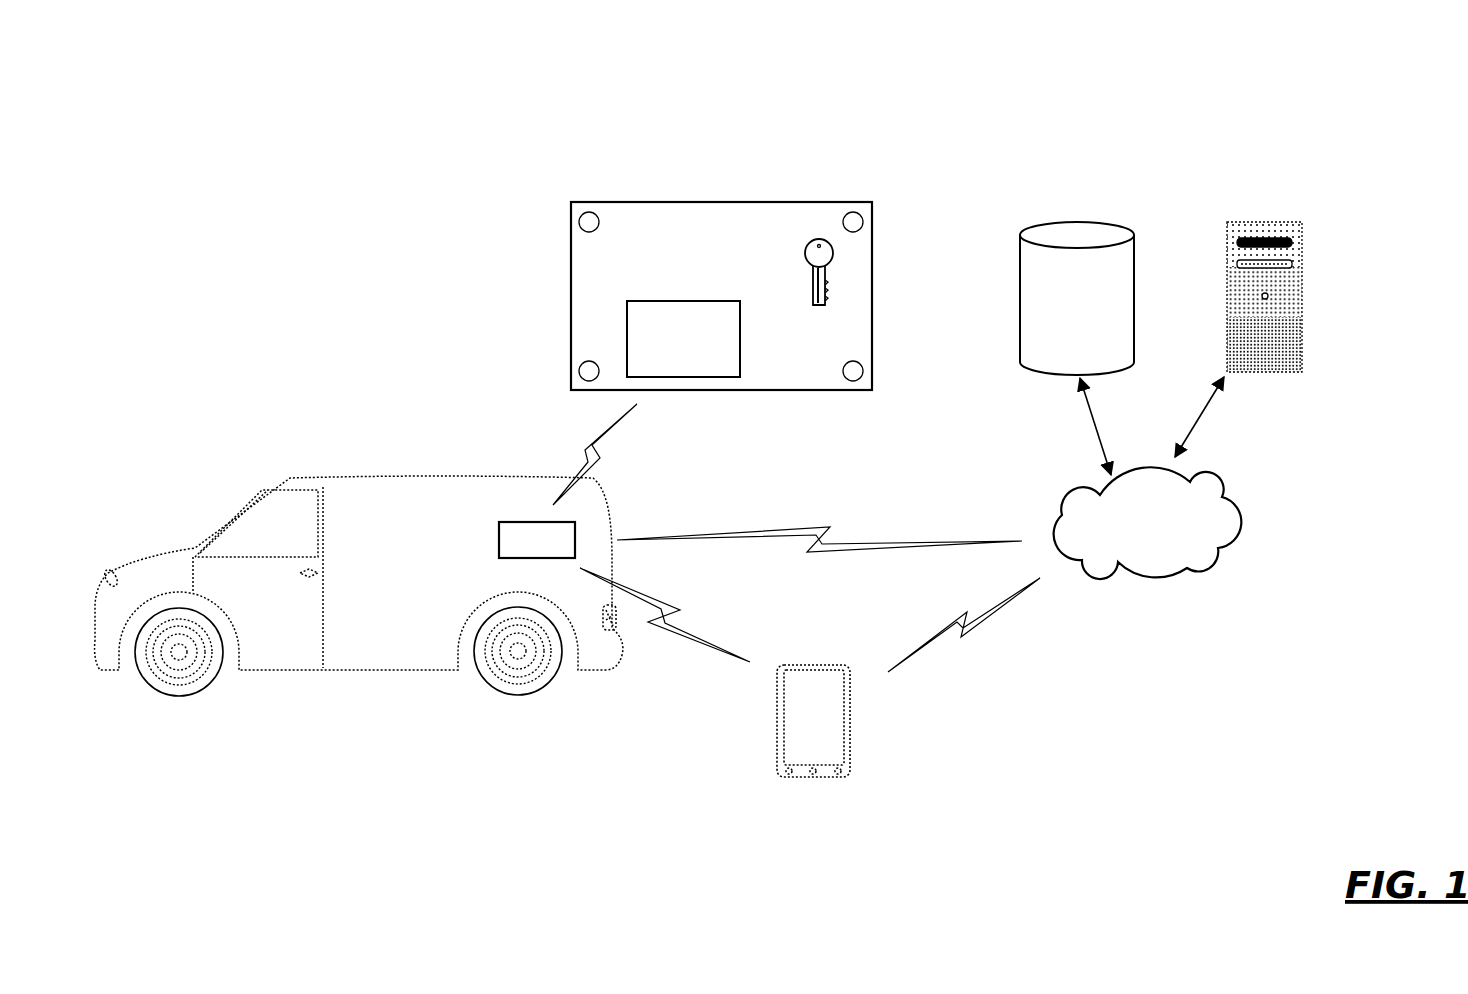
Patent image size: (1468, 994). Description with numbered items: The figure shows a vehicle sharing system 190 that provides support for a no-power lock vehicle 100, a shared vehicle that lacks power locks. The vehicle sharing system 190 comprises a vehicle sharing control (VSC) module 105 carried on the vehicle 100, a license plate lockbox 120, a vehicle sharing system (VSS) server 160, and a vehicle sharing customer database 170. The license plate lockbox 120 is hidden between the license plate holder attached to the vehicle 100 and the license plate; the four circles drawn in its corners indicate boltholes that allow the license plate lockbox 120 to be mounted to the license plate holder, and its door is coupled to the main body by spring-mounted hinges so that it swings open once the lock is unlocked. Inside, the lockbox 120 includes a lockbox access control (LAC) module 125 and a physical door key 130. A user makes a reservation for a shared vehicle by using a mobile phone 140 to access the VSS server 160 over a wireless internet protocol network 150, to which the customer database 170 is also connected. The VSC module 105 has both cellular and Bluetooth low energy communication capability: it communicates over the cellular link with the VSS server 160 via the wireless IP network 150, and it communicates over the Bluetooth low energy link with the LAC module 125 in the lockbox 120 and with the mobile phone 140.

The no-power lock vehicle 100 is at (384, 478).
The vehicle sharing control module 105 is at (497, 540).
The license plate lockbox 120 is at (796, 202).
The lockbox access control module 125 is at (688, 300).
The physical door key 130 is at (822, 307).
The mobile phone 140 is at (852, 722).
The wireless internet protocol network 150 is at (1148, 523).
The vehicle sharing system server 160 is at (1275, 222).
The vehicle sharing customer database 170 is at (1077, 298).
The vehicle sharing system 190 is at (1350, 117).